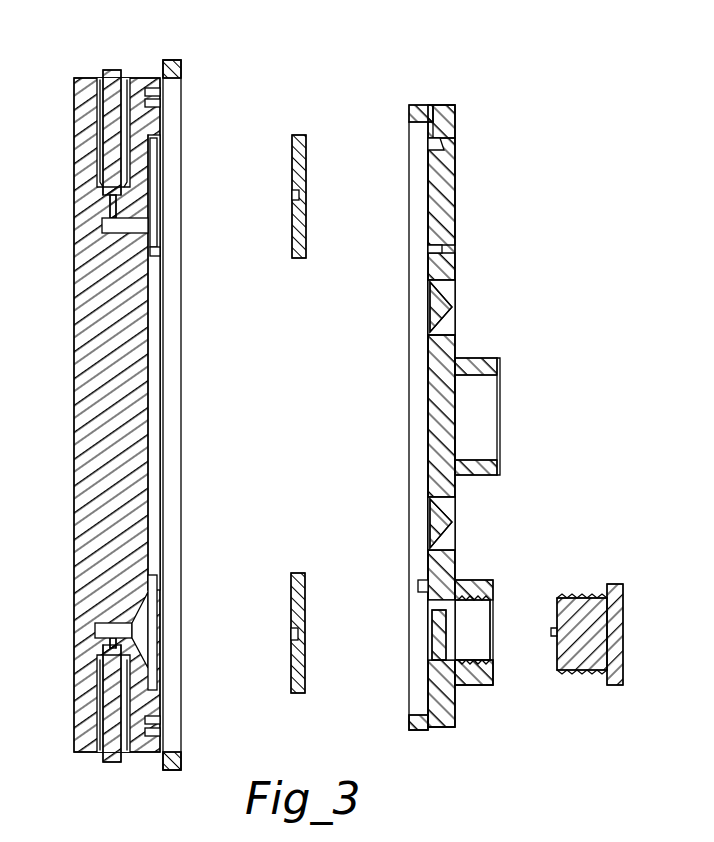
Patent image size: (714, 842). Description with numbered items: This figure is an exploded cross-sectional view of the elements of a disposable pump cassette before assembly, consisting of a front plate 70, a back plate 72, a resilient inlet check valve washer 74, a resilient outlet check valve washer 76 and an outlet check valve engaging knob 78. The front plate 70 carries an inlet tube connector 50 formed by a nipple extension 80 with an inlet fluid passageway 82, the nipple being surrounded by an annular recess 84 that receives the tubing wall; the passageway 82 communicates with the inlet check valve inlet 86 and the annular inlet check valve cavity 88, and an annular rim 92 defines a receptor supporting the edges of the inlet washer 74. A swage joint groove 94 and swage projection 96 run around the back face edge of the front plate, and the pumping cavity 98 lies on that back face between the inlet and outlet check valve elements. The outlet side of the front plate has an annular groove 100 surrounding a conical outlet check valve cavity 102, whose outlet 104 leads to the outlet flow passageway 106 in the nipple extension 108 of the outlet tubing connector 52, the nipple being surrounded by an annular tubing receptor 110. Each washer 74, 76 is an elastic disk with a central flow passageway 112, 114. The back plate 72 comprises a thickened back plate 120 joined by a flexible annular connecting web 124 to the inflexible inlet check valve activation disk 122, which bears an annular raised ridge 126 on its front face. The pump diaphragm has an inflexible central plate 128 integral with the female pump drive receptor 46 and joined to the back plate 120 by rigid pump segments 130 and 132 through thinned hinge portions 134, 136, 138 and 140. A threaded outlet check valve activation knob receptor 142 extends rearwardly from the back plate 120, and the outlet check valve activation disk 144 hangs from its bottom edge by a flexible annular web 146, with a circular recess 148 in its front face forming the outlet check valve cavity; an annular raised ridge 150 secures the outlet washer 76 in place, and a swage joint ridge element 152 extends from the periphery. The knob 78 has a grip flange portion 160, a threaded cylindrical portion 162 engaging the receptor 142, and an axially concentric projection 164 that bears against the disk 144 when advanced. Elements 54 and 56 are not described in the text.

The female pump drive receptor 46 is at (478, 377).
The inlet tube connector 50 is at (119, 66).
The outlet tubing connector 52 is at (110, 766).
The upper end plate 54 is at (174, 62).
The lower end plate 56 is at (177, 769).
The front plate 70 is at (70, 419).
The back plate 72 is at (463, 308).
The inlet check valve washer 74 is at (292, 233).
The outlet check valve washer 76 is at (291, 658).
The outlet check valve activation knob 78 is at (630, 621).
The nipple extension 80 is at (103, 126).
The inlet fluid passageway 82 is at (105, 162).
The annular recess 84 is at (95, 88).
The inlet check valve inlet 86 is at (110, 225).
The annular inlet check valve cavity 88 is at (153, 242).
The annular rim 92 is at (158, 136).
The swage joint groove 94 is at (156, 105).
The swage projection 96 is at (160, 93).
The pumping cavity 98 is at (166, 416).
The annular groove 100 is at (153, 588).
The conical outlet check valve cavity 102 is at (140, 629).
The outlet check valve outlet 104 is at (100, 630).
The outlet flow passageway 106 is at (97, 666).
The outlet tubing nipple extension 108 is at (100, 698).
The annular tubing receptor 110 is at (97, 732).
The central flow passageway 112 is at (300, 194).
The central flow passageway 114 is at (300, 631).
The back plate 120 is at (456, 123).
The inlet check valve activation disk 122 is at (456, 198).
The annular connecting web 124 is at (448, 249).
The annular raised ridge 126 is at (432, 142).
The central plate 128 is at (438, 418).
The pump segment 130 is at (438, 306).
The pump segment 132 is at (440, 522).
The hinge portion 134 is at (432, 335).
The hinge portion 136 is at (432, 280).
The hinge portion 138 is at (432, 497).
The hinge portion 140 is at (432, 549).
The outlet check valve activation knob receptor 142 is at (490, 583).
The outlet check valve activation disk 144 is at (455, 630).
The annular web 146 is at (470, 670).
The circular recess 148 is at (430, 644).
The annular raised ridge 150 is at (425, 580).
The swage joint ridge element 152 is at (410, 108).
The grip flange portion 160 is at (616, 688).
The threaded cylindrical portion 162 is at (572, 675).
The axially concentric projection 164 is at (551, 633).